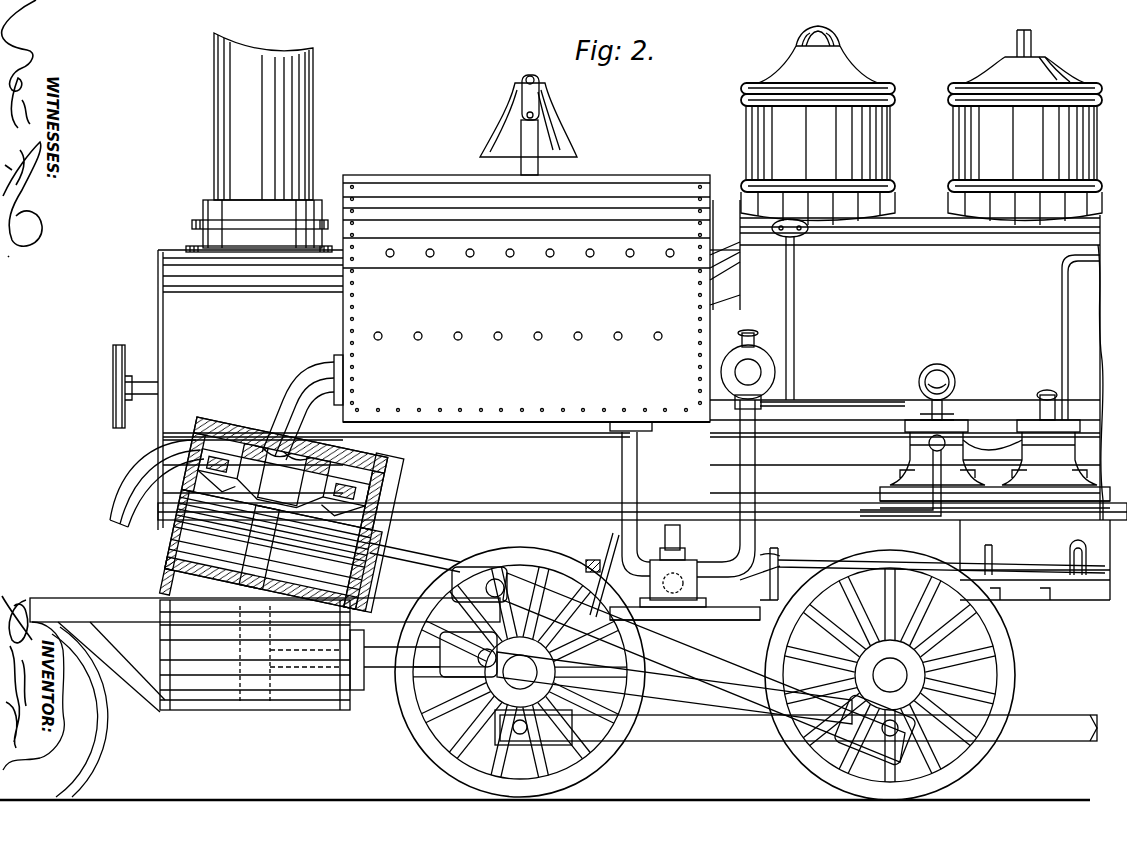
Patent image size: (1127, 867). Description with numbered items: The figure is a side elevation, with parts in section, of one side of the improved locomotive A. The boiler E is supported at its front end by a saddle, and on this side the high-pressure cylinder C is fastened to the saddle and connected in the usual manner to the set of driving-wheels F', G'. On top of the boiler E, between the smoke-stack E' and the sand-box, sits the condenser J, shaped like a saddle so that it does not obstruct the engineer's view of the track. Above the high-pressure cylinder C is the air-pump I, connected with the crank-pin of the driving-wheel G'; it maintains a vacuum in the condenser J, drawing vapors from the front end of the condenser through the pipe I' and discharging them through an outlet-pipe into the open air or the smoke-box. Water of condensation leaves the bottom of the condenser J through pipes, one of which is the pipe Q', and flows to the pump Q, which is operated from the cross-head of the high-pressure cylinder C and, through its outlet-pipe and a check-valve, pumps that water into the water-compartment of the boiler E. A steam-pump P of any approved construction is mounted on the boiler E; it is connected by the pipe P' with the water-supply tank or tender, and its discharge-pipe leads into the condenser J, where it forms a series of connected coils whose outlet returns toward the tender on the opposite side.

The locomotive A is at (578, 436).
The boiler E is at (606, 390).
The smoke-stack E' is at (248, 142).
The condenser J is at (526, 303).
The air-pump I is at (266, 526).
The pipe I' is at (302, 407).
The high-pressure cylinder C is at (200, 700).
The driving-wheel F' is at (520, 672).
The driving-wheel G' is at (913, 675).
The pump Q is at (685, 599).
The pipe Q' is at (619, 504).
The steam-pump P is at (985, 440).
The pipe P' is at (995, 525).